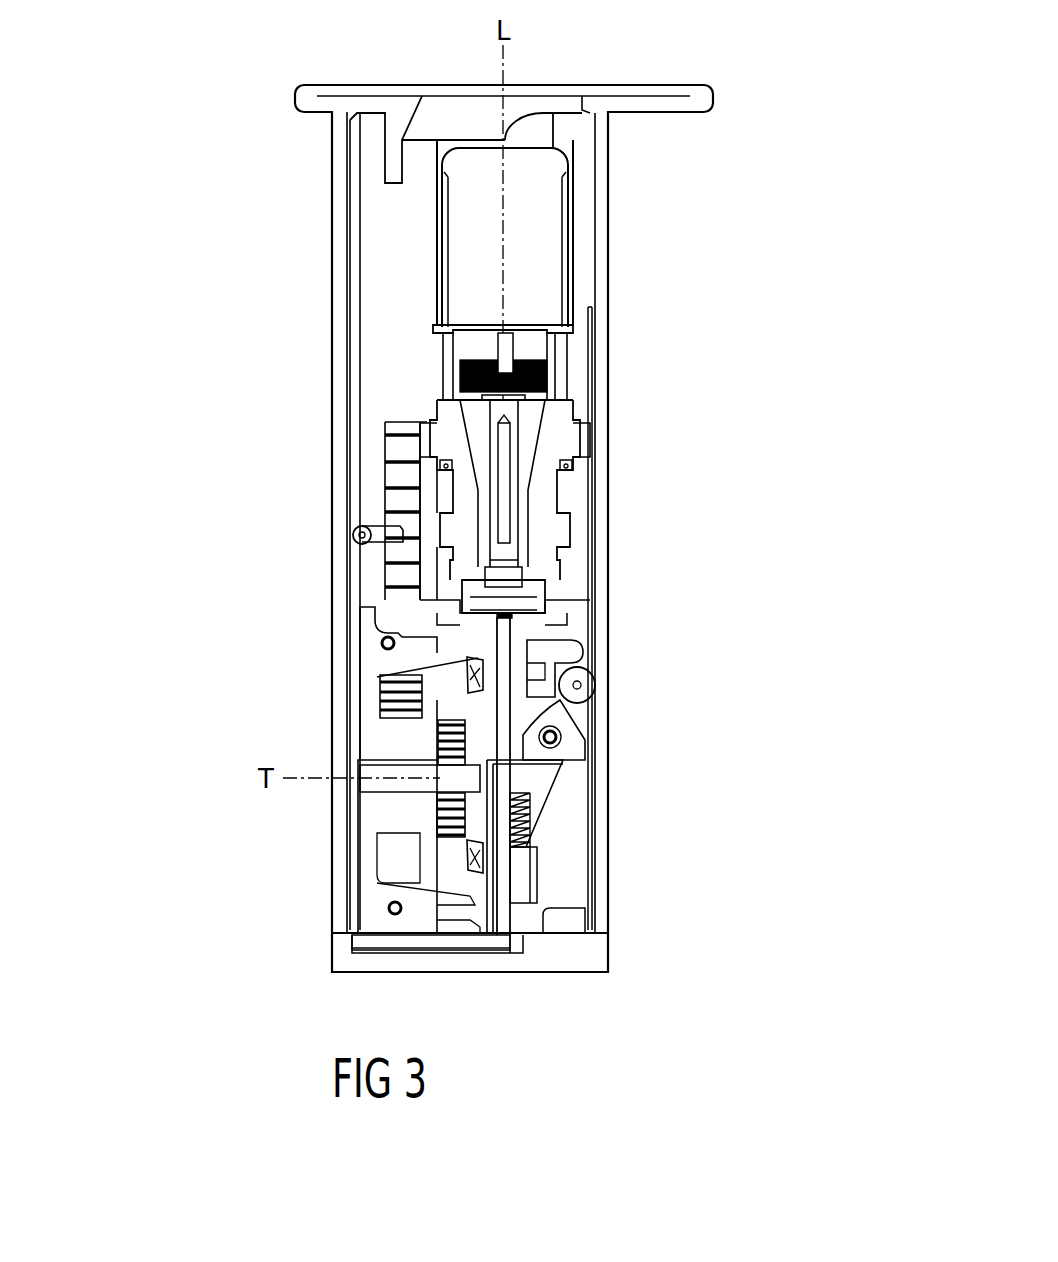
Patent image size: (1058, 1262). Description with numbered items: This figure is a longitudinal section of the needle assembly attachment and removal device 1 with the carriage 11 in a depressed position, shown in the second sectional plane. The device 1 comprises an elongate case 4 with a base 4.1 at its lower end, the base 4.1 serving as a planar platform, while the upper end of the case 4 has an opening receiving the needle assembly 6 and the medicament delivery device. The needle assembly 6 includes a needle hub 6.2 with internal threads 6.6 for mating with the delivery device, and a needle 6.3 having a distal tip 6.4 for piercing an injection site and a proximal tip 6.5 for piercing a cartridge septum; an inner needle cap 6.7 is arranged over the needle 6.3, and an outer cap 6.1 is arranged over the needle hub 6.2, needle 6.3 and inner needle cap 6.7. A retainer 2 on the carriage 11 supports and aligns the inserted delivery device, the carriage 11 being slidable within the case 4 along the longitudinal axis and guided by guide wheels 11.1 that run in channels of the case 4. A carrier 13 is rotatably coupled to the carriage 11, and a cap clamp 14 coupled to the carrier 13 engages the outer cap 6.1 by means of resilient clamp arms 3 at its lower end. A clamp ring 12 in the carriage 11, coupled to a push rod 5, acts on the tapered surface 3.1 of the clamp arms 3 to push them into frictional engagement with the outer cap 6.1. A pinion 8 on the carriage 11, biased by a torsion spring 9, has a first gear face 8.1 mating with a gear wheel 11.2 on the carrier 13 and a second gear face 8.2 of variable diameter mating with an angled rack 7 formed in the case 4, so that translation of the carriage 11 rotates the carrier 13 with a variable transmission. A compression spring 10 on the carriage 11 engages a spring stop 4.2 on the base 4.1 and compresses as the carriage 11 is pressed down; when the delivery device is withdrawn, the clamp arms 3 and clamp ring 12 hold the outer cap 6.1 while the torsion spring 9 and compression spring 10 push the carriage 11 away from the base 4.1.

The needle assembly attachment and removal device 1 is at (318, 256).
The retainer 2 is at (556, 196).
The clamp arms 3 is at (465, 577).
The tapered surface 3.1 is at (367, 610).
The case 4 is at (337, 905).
The base 4.1 is at (347, 959).
The spring stop 4.2 is at (528, 868).
The push rod 5 is at (507, 902).
The needle assembly 6 is at (548, 323).
The outer cap 6.1 is at (543, 437).
The needle hub 6.2 is at (550, 354).
The needle 6.3 is at (515, 492).
The distal tip 6.4 is at (515, 540).
The proximal tip 6.5 is at (440, 329).
The internal threads 6.6 is at (465, 372).
The inner needle cap 6.7 is at (445, 440).
The rack 7 is at (395, 497).
The pinion 8 is at (468, 680).
The first gear face 8.1 is at (468, 680).
The second gear face 8.2 is at (387, 700).
The torsion spring 9 is at (440, 827).
The compression spring 10 is at (530, 833).
The carriage 11 is at (563, 652).
The guide wheels 11.1 is at (352, 527).
The gear wheel 11.2 is at (575, 674).
The clamp ring 12 is at (540, 613).
The carrier 13 is at (580, 498).
The cap clamp 14 is at (567, 472).